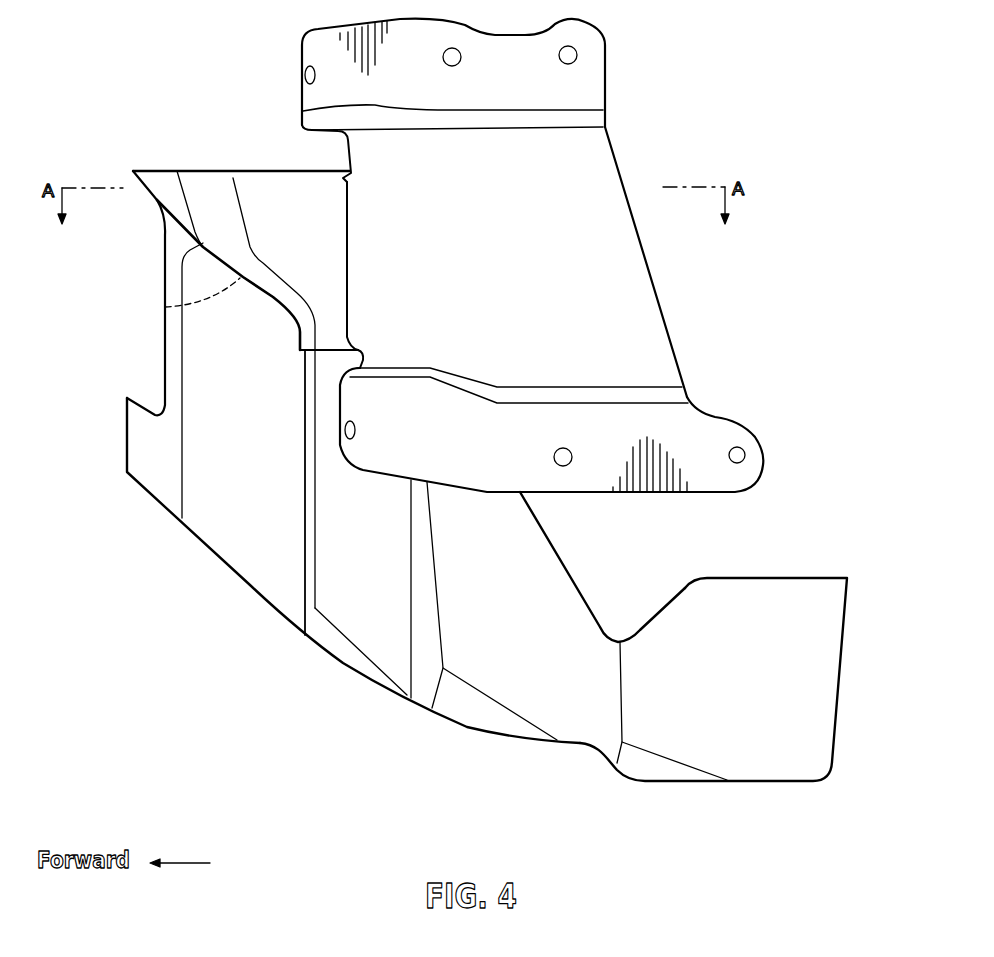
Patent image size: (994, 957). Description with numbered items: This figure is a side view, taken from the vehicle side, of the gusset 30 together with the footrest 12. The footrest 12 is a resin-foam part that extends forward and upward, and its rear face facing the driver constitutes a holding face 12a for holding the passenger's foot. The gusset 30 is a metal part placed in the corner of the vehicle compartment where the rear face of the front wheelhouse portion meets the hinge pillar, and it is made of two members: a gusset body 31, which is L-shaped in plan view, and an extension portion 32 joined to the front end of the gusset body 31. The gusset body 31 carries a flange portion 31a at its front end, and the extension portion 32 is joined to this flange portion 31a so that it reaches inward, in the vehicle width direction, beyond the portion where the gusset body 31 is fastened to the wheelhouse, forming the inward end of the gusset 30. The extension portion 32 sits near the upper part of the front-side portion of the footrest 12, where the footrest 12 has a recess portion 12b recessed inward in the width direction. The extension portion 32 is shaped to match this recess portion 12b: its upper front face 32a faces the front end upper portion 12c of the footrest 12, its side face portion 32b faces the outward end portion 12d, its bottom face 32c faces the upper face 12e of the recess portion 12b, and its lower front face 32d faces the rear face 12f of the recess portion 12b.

The footrest 12 is at (469, 490).
The holding face 12a is at (552, 542).
The recess portion 12b is at (240, 518).
The front end upper portion 12c is at (160, 185).
The outward end portion 12d is at (363, 623).
The upper face 12e is at (165, 307).
The rear face 12f is at (307, 580).
The gusset 30 is at (490, 255).
The gusset body 31 is at (494, 262).
The flange portion 31a is at (350, 242).
The extension portion 32 is at (260, 364).
The upper front face 32a is at (217, 190).
The side face portion 32b is at (298, 192).
The bottom face 32c is at (273, 290).
The lower front face 32d is at (302, 338).